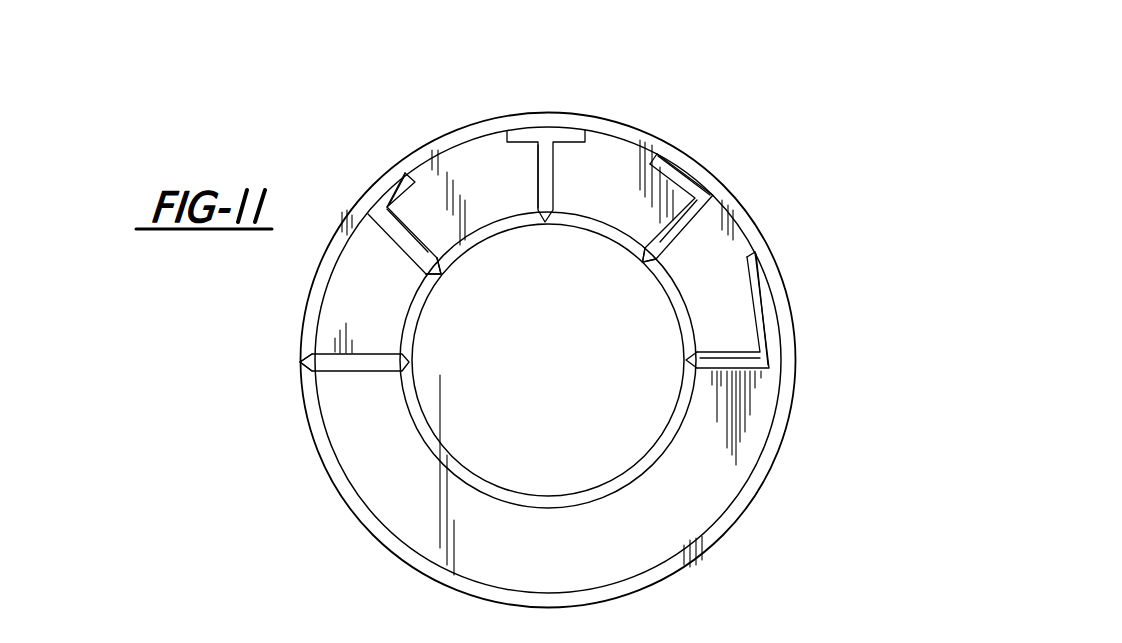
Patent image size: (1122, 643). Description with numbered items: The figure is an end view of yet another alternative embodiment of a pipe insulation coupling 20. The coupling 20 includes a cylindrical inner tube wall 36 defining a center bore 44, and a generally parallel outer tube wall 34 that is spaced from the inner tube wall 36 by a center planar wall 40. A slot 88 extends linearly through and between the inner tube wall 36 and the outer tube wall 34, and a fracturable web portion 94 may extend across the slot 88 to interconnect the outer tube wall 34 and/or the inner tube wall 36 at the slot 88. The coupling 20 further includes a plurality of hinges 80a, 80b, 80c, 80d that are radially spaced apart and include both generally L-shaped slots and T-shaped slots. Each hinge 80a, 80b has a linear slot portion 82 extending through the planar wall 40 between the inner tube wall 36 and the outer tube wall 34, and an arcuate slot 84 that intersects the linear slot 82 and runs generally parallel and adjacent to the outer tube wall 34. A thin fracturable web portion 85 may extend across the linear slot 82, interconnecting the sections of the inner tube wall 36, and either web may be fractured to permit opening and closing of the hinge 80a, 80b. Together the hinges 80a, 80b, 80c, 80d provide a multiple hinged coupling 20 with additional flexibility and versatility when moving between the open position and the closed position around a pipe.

The pipe insulation coupling 20 is at (845, 88).
The outer tube wall 34 is at (450, 128).
The inner tube wall 36 is at (503, 233).
The center planar wall 40 is at (570, 561).
The center bore 44 is at (497, 492).
The hinge 80a is at (350, 177).
The hinge 80b is at (585, 107).
The hinge 80c is at (735, 165).
The hinge 80d is at (813, 328).
The linear slot portion 82 is at (555, 173).
The arcuate slot 84 is at (397, 200).
The thin fracturable web portion 85 is at (441, 272).
The slot 88 is at (362, 372).
The fracturable web portion 94 is at (300, 362).